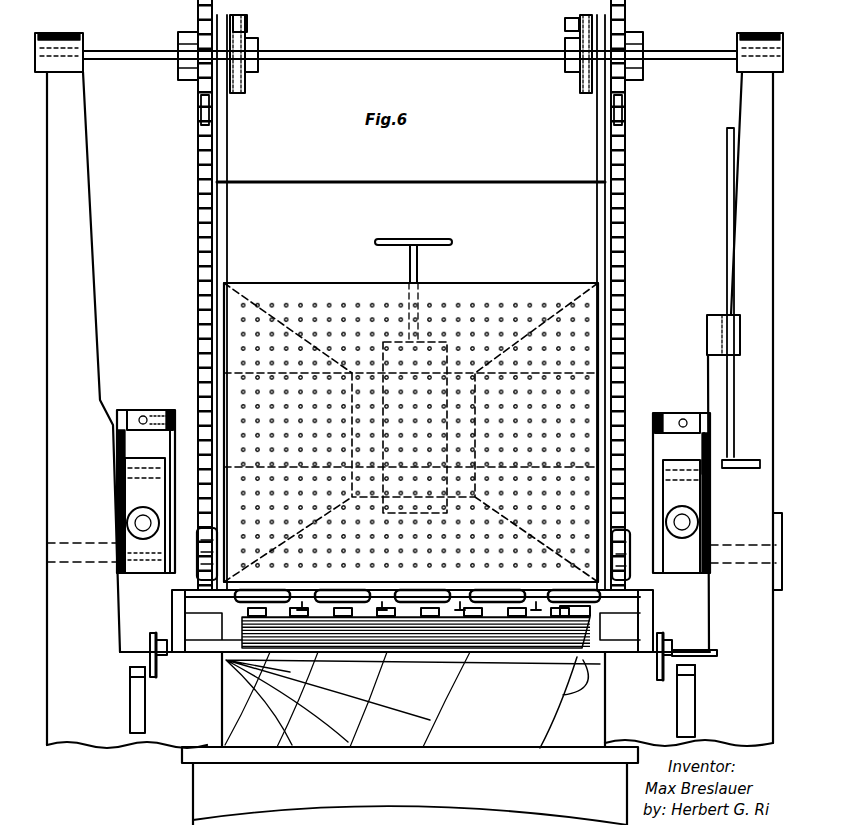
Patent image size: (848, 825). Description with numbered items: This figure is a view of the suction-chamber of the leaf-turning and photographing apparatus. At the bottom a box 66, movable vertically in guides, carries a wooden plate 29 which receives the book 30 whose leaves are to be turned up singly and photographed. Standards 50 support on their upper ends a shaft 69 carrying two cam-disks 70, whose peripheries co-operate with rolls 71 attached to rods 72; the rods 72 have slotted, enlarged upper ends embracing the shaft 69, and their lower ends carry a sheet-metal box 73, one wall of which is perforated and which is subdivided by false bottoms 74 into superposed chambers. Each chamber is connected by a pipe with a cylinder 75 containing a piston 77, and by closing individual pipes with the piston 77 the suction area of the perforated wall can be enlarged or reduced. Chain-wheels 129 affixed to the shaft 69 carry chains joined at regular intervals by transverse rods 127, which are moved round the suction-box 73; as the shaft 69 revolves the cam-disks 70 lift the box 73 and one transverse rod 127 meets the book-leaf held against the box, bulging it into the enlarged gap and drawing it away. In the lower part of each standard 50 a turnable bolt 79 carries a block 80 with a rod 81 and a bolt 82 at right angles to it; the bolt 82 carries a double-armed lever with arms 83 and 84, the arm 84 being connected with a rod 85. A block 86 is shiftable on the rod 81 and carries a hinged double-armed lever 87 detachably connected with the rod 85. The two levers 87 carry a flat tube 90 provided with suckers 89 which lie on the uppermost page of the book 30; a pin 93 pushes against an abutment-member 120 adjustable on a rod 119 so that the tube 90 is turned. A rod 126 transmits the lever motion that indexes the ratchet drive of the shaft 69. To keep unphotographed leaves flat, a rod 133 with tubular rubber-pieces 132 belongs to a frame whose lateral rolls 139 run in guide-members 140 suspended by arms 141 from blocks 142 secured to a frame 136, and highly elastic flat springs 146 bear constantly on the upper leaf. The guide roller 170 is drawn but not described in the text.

The wooden plate 29 is at (413, 699).
The book 30 is at (535, 640).
The standards 50 is at (409, 390).
The box 66 is at (410, 786).
The shaft 69 is at (138, 62).
The cam-disks 70 is at (242, 92).
The rolls 71 is at (248, 22).
The rods 72 is at (230, 152).
The sheet-metal box 73 is at (512, 295).
The false bottoms 74 is at (590, 375).
The cylinder 75 is at (415, 345).
The piston 77 is at (408, 260).
The turnable bolt 79 is at (411, 567).
The block 80 is at (143, 523).
The rod 81 is at (118, 560).
The turnable bolt 82 is at (137, 472).
The lever arm 83 is at (172, 510).
The lever arm 84 is at (120, 438).
The rod 85 is at (150, 410).
The block 86 is at (135, 490).
The double-armed lever 87 is at (172, 412).
The suckers 89 is at (345, 616).
The flat tube 90 is at (490, 620).
The pin 93 is at (718, 653).
The rod 119 is at (730, 218).
The abutment-member 120 is at (707, 343).
The rod 126 is at (198, 240).
The transverse rods 127 is at (432, 181).
The chain-wheels 129 is at (200, 112).
The tubular rubber-pieces 132 is at (558, 620).
The rod 133 is at (572, 664).
The frame 136 is at (138, 708).
The rolls 139 is at (150, 638).
The guide-members 140 is at (150, 646).
The arms 141 is at (150, 652).
The blocks 142 is at (140, 672).
The flat springs 146 is at (426, 650).
The guide roller 170 is at (197, 560).